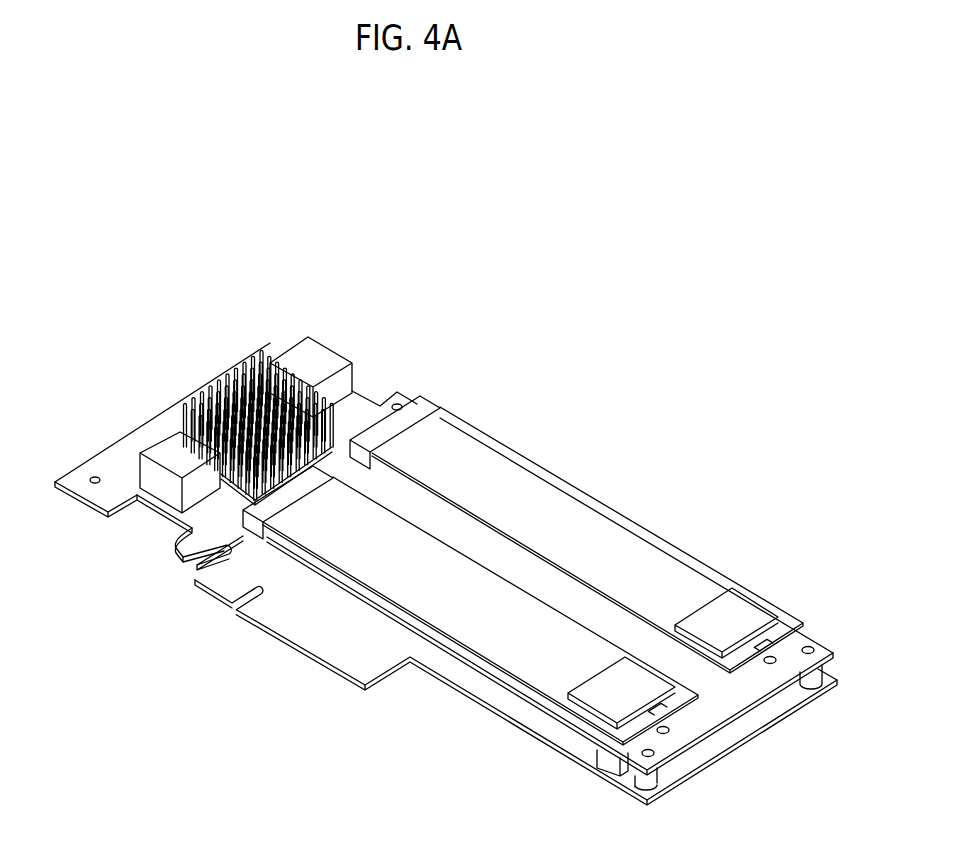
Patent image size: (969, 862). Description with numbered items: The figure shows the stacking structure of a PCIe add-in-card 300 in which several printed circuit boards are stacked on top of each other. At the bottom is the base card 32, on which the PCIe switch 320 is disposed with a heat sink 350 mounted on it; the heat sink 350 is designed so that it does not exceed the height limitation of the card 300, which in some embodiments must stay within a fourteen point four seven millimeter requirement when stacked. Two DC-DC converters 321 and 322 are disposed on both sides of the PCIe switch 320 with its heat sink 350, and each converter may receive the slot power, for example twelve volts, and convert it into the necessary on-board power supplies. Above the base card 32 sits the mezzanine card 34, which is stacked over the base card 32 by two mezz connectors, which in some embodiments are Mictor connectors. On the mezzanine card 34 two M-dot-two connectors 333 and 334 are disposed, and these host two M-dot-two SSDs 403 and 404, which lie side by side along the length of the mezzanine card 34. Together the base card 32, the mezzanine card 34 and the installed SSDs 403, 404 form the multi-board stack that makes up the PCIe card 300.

The PCIe add-in-card 300 is at (578, 386).
The base card 32 is at (760, 717).
The mezzanine card 34 is at (697, 722).
The DC-DC converter 321 is at (167, 444).
The DC-DC converter 322 is at (317, 358).
The PCIe switch 320 is at (249, 414).
The heat sink 350 is at (227, 378).
The M.2 connector 333 is at (247, 508).
The M.2 connector 334 is at (425, 402).
The M.2 SSD 403 is at (477, 630).
The M.2 SSD 404 is at (588, 511).